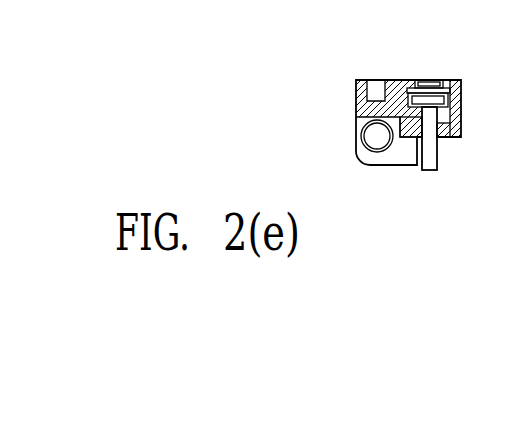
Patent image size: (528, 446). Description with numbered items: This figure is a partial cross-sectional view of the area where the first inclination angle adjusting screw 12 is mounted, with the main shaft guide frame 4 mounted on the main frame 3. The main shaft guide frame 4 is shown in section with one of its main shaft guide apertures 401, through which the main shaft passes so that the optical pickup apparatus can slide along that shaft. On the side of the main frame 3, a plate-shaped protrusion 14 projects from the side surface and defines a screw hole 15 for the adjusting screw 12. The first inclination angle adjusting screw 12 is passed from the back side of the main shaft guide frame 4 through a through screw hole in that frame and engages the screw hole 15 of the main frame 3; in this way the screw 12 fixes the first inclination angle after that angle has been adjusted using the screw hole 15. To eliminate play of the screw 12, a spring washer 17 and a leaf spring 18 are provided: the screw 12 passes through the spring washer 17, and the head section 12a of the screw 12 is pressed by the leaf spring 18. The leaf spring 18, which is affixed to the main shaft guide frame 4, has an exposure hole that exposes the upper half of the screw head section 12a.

The main shaft guide frame 4 is at (355, 95).
The main frame 3 is at (462, 125).
The main shaft guide aperture 401 is at (372, 143).
The screw hole 15 is at (418, 140).
The plate-shaped protrusion 14 is at (446, 131).
The head section 12a is at (430, 81).
The leaf spring 18 is at (411, 88).
The spring washer 17 is at (452, 91).
The first inclination angle adjusting screw 12 is at (437, 169).